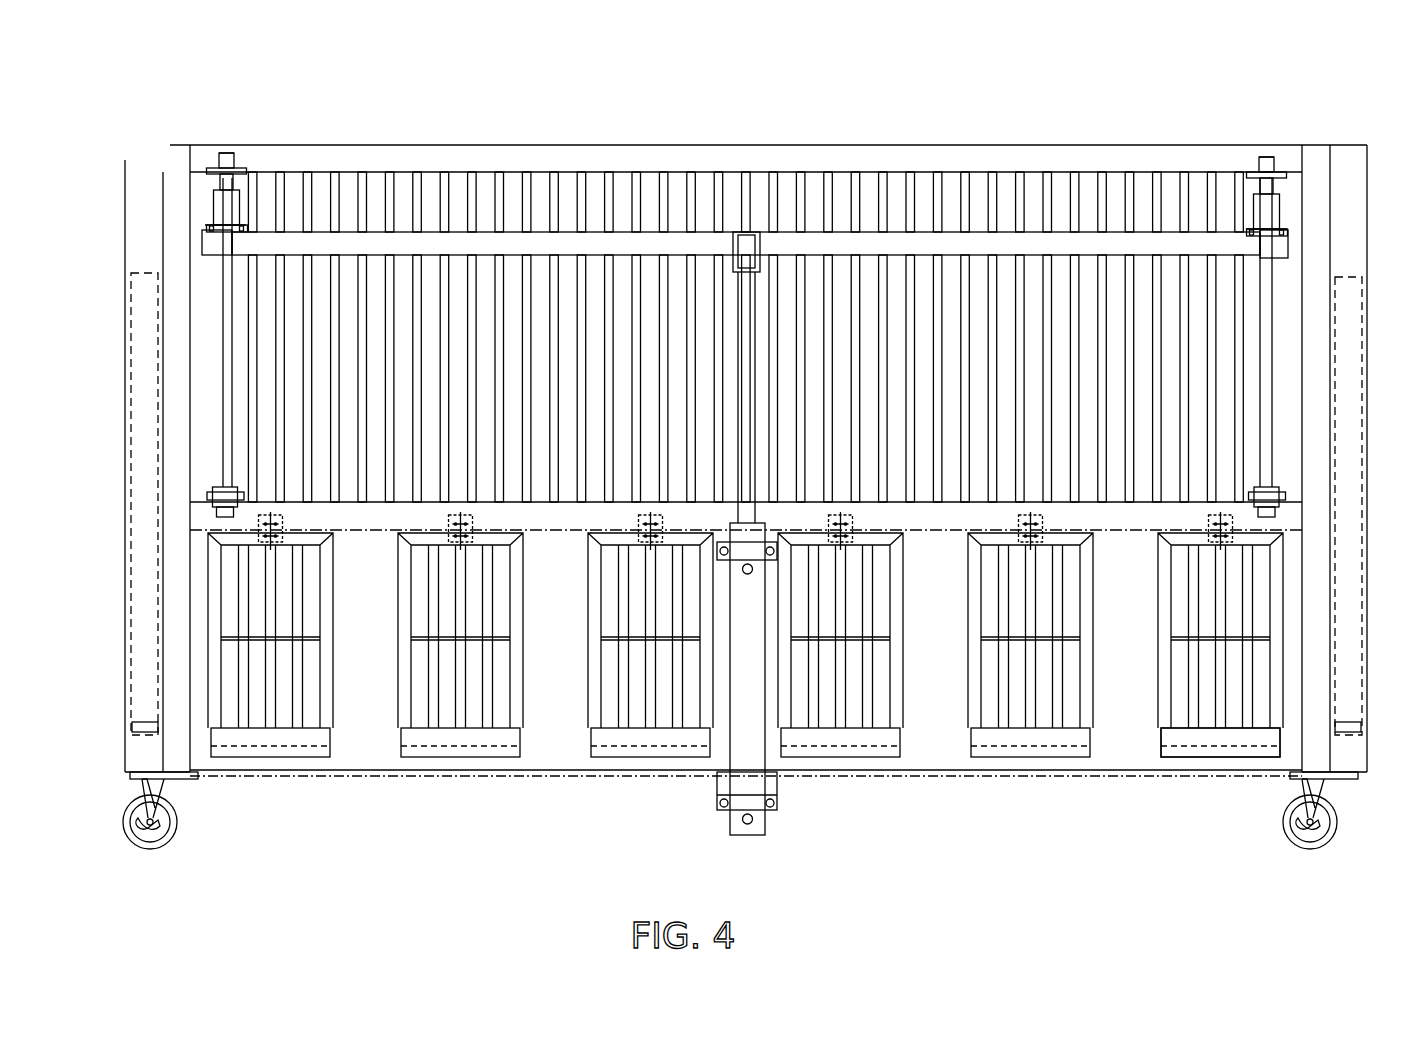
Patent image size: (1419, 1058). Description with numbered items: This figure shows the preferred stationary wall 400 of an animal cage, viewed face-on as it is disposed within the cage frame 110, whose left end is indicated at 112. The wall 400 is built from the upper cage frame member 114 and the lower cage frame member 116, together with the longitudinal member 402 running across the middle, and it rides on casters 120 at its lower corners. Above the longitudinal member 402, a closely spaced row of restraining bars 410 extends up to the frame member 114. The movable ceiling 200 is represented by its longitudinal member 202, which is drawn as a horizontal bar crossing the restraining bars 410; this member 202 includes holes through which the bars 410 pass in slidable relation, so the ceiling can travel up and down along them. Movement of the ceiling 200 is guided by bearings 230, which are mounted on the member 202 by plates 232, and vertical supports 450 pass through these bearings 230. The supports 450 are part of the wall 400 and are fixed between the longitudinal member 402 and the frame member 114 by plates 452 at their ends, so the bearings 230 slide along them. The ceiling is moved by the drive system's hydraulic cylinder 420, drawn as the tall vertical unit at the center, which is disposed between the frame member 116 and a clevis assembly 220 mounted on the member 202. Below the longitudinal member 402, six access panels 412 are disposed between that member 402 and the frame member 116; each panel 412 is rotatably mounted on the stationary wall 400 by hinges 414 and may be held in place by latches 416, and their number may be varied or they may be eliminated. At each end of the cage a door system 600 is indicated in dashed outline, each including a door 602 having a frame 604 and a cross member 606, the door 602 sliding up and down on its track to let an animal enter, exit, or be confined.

The stationary wall 400 is at (459, 106).
The frame 110 is at (1308, 180).
The left end of frame 112 is at (176, 182).
The frame member 114 is at (1067, 160).
The frame member 116 is at (936, 760).
The casters 120 is at (176, 830).
The ceiling 200 is at (745, 299).
The longitudinal member 202 is at (560, 232).
The clevis assembly 220 is at (733, 246).
The bearings 230 is at (220, 203).
The plates 232 is at (205, 227).
The longitudinal member 402 is at (746, 518).
The restraining bars 410 is at (858, 215).
The access panels 412 is at (745, 645).
The hinges 414 is at (1172, 732).
The latches 416 is at (1207, 534).
The hydraulic cylinder 420 is at (748, 705).
The supports 450 is at (228, 272).
The plates 452 is at (226, 165).
The door system 600 is at (744, 516).
The door 602 is at (140, 485).
The frame 604 is at (1355, 625).
The cross member 606 is at (175, 760).